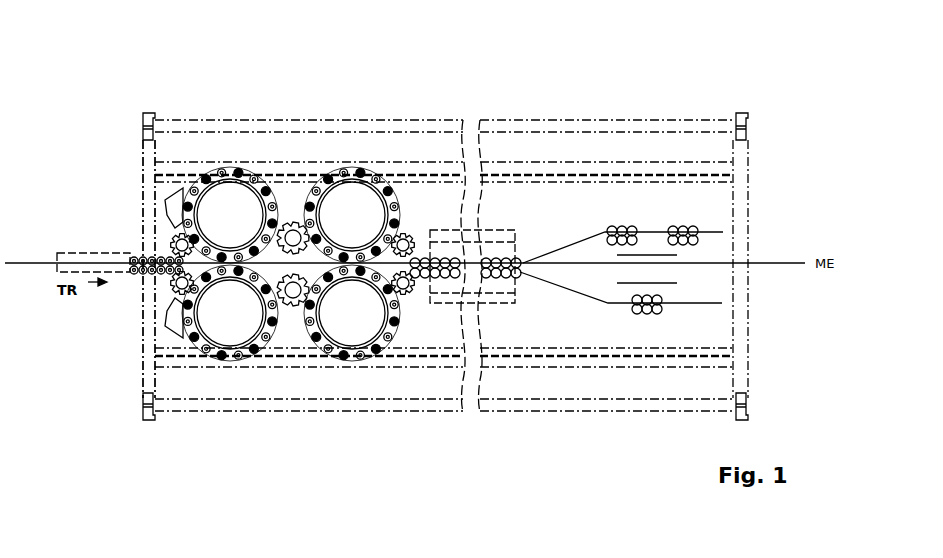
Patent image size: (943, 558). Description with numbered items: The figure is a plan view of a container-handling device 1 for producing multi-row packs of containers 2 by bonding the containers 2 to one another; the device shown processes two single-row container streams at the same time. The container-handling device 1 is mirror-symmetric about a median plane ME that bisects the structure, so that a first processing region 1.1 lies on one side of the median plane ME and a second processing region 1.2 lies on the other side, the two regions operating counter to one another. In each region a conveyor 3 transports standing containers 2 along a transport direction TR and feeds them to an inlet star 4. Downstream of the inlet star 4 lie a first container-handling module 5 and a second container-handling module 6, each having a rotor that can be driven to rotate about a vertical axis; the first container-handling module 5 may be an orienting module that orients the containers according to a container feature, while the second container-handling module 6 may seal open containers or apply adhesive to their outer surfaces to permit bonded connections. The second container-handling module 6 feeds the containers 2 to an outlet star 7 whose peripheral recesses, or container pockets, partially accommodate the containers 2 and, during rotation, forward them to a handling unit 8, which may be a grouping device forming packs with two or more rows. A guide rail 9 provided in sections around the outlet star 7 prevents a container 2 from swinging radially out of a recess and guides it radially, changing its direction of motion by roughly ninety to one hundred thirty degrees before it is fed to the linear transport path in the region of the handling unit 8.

The container-handling device 1 is at (708, 71).
The first processing region 1.1 is at (122, 135).
The second processing region 1.2 is at (125, 341).
The containers 2 is at (130, 273).
The conveyor 3 is at (102, 253).
The inlet star 4 is at (171, 240).
The first container-handling module 5 is at (227, 150).
The second container-handling module 6 is at (357, 150).
The outlet star 7 is at (410, 238).
The handling unit 8 is at (487, 222).
The guide rail 9 is at (385, 258).